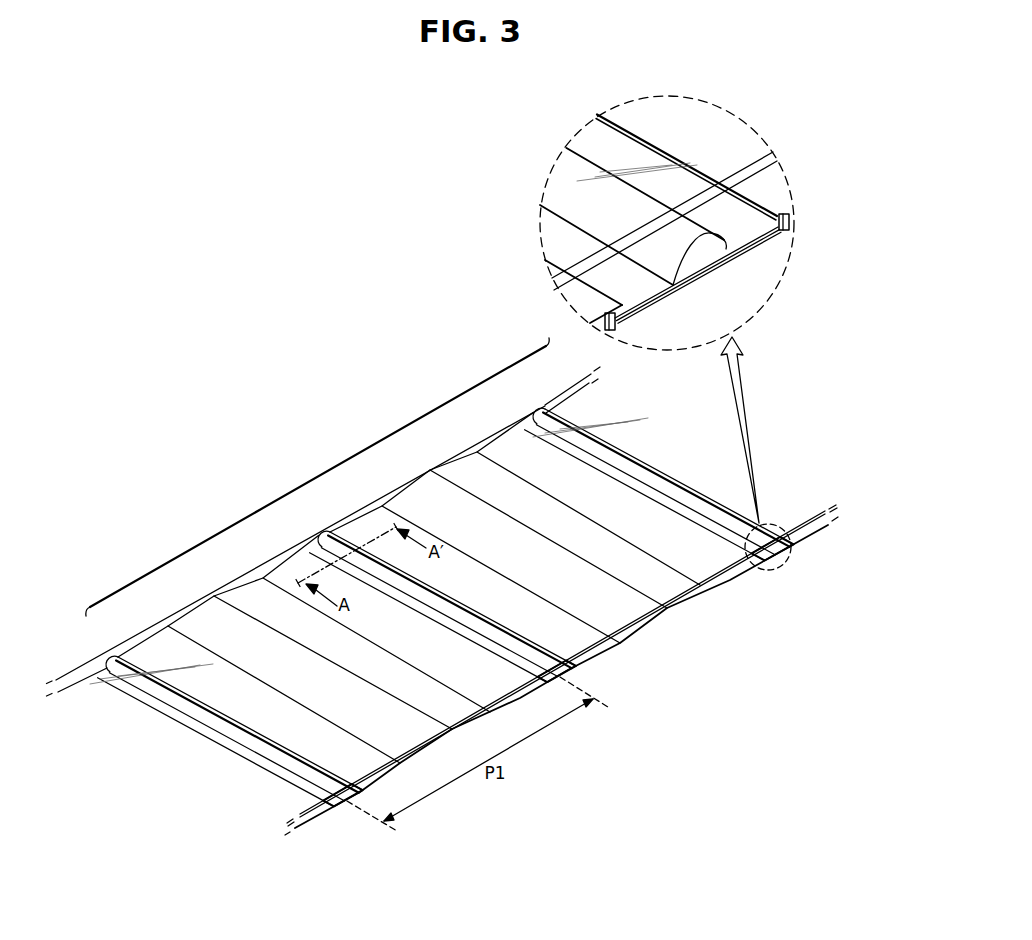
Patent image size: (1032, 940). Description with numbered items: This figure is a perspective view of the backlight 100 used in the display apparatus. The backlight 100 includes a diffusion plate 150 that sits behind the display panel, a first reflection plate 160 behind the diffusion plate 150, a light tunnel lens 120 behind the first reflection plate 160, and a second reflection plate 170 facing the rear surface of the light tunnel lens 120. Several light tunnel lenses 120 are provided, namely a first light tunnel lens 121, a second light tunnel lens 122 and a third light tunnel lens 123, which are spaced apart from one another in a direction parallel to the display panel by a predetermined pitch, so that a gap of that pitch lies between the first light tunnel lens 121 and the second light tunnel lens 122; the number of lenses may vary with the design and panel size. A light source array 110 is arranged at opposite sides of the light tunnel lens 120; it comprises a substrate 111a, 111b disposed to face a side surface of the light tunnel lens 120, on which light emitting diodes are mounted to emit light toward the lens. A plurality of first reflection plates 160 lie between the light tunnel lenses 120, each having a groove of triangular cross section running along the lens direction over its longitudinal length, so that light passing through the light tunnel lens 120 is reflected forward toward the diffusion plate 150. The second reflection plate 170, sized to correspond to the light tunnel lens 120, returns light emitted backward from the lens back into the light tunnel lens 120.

The backlight 100 is at (167, 419).
The light source array 110 is at (747, 293).
The substrate 111a is at (615, 332).
The substrate 111b is at (797, 219).
The light tunnel lens 120 is at (338, 478).
The first light tunnel lens 121 is at (116, 658).
The second light tunnel lens 122 is at (328, 532).
The third light tunnel lens 123 is at (544, 409).
The diffusion plate 150 is at (718, 576).
The first reflection plate 160 is at (617, 646).
The second reflection plate 170 is at (352, 806).